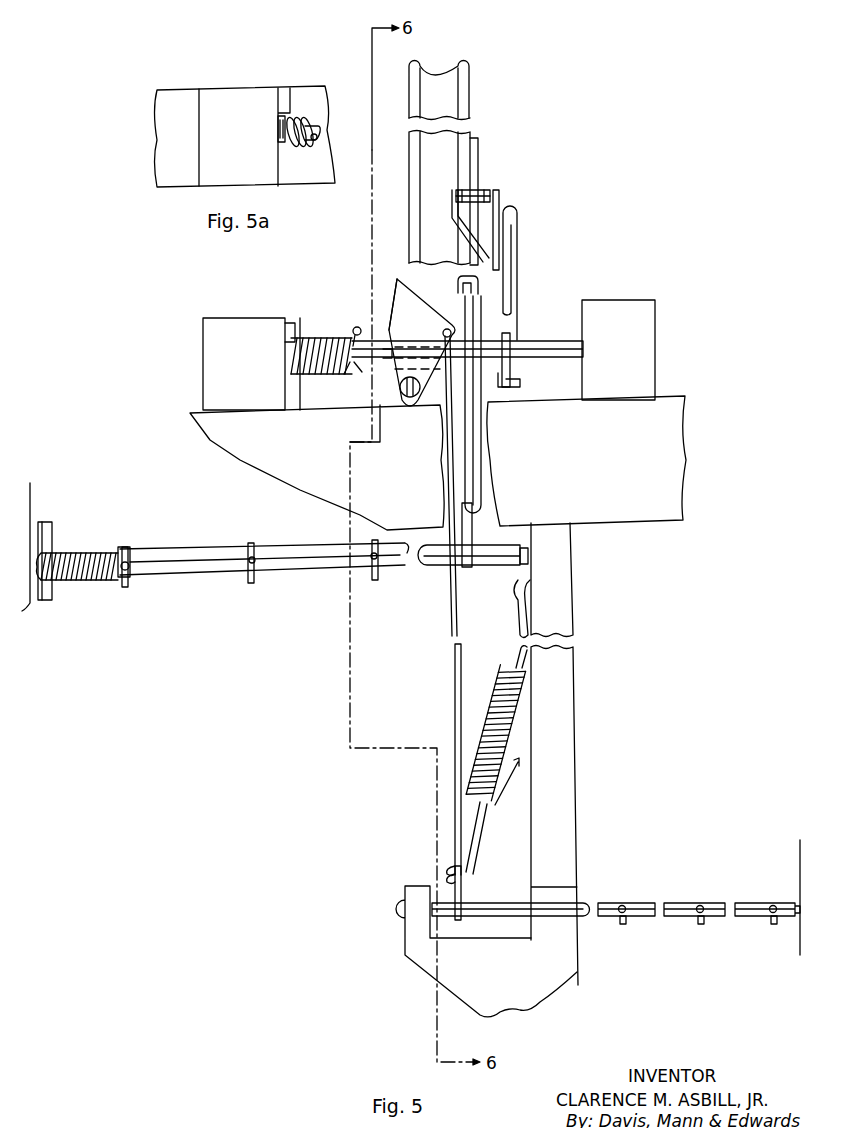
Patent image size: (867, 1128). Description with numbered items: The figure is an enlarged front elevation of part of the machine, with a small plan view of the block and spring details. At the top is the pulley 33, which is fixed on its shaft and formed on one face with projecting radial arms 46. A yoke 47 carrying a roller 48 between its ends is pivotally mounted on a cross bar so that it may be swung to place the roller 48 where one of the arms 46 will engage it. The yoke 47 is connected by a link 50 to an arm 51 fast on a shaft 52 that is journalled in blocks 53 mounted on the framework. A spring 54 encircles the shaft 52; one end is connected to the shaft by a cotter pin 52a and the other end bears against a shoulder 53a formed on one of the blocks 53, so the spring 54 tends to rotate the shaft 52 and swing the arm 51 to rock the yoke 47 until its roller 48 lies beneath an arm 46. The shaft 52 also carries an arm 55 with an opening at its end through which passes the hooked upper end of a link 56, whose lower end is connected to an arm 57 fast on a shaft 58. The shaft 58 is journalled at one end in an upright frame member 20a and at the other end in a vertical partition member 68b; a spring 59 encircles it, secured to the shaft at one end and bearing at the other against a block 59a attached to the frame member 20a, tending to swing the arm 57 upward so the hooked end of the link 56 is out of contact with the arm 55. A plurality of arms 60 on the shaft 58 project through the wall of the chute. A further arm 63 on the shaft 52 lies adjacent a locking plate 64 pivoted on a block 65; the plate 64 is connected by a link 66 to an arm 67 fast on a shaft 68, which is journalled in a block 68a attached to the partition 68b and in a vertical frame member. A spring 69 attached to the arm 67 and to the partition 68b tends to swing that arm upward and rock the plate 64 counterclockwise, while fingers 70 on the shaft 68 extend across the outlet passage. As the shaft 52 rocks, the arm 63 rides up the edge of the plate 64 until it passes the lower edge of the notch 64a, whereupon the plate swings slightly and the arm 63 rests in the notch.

In FIG. 5, the upright frame member 20a is at (30, 497).
In FIG. 5, the pulley 33 is at (472, 78).
In FIG. 5, the radial arms 46 is at (480, 147).
In FIG. 5, the yoke 47 is at (500, 206).
In FIG. 5, the roller 48 is at (482, 190).
In FIG. 5, the link 50 is at (518, 239).
In FIG. 5, the arm 51 is at (516, 385).
In FIG. 5a, the shaft 52 is at (318, 120).
In FIG. 5, the shaft 52 is at (553, 341).
In FIG. 5, the cotter pin 52a is at (357, 327).
In FIG. 5a, the blocks 53 is at (232, 92).
In FIG. 5, the blocks 53 is at (612, 300).
In FIG. 5a, the shoulder 53a is at (283, 117).
In FIG. 5a, the spring 54 is at (298, 122).
In FIG. 5, the spring 54 is at (326, 338).
In FIG. 5, the arm 55 is at (466, 304).
In FIG. 5, the link 56 is at (484, 422).
In FIG. 5, the arm 57 is at (472, 528).
In FIG. 5, the shaft 58 is at (297, 572).
In FIG. 5, the spring 59 is at (82, 582).
In FIG. 5, the block 59a is at (48, 523).
In FIG. 5, the arms 60 is at (370, 540).
In FIG. 5, the arm 63 is at (386, 358).
In FIG. 5, the locking plate 64 is at (402, 278).
In FIG. 5, the notch 64a is at (392, 322).
In FIG. 5, the block 65 is at (390, 393).
In FIG. 5, the link 66 is at (453, 656).
In FIG. 5, the arm 67 is at (440, 886).
In FIG. 5, the shaft 68 is at (590, 904).
In FIG. 5, the block 68a is at (413, 960).
In FIG. 5, the vertical partition member 68b is at (575, 755).
In FIG. 5, the spring 69 is at (496, 803).
In FIG. 5, the fingers 70 is at (774, 926).